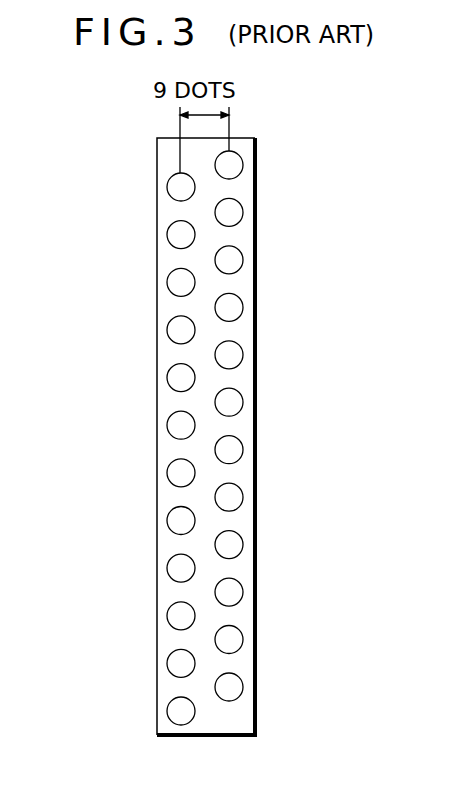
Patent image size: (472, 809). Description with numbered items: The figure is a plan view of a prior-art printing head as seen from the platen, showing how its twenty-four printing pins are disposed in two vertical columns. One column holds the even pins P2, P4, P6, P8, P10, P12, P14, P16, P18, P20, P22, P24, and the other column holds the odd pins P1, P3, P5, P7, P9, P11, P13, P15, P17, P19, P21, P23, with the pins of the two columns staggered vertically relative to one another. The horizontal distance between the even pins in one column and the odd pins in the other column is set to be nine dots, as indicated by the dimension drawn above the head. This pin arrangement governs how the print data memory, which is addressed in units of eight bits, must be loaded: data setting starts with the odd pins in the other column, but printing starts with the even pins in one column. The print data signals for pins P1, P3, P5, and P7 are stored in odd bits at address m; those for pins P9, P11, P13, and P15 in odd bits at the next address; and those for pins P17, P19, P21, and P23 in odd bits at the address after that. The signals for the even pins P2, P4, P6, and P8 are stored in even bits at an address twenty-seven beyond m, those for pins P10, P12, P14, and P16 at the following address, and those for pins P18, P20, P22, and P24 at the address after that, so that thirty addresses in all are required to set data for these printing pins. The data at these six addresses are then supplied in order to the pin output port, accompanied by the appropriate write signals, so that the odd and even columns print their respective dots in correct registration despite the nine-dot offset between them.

The printing pin P1 is at (243, 165).
The printing pin P2 is at (167, 187).
The printing pin P3 is at (243, 212).
The printing pin P4 is at (167, 235).
The printing pin P5 is at (243, 260).
The printing pin P6 is at (167, 282).
The printing pin P7 is at (243, 307).
The printing pin P8 is at (167, 330).
The printing pin P9 is at (243, 355).
The printing pin P10 is at (167, 378).
The printing pin P11 is at (243, 402).
The printing pin P12 is at (167, 425).
The printing pin P13 is at (243, 450).
The printing pin P14 is at (167, 473).
The printing pin P15 is at (243, 497).
The printing pin P16 is at (167, 520).
The printing pin P17 is at (243, 545).
The printing pin P18 is at (167, 568).
The printing pin P19 is at (243, 592).
The printing pin P20 is at (167, 616).
The printing pin P21 is at (243, 640).
The printing pin P22 is at (167, 663).
The printing pin P23 is at (243, 687).
The printing pin P24 is at (167, 711).